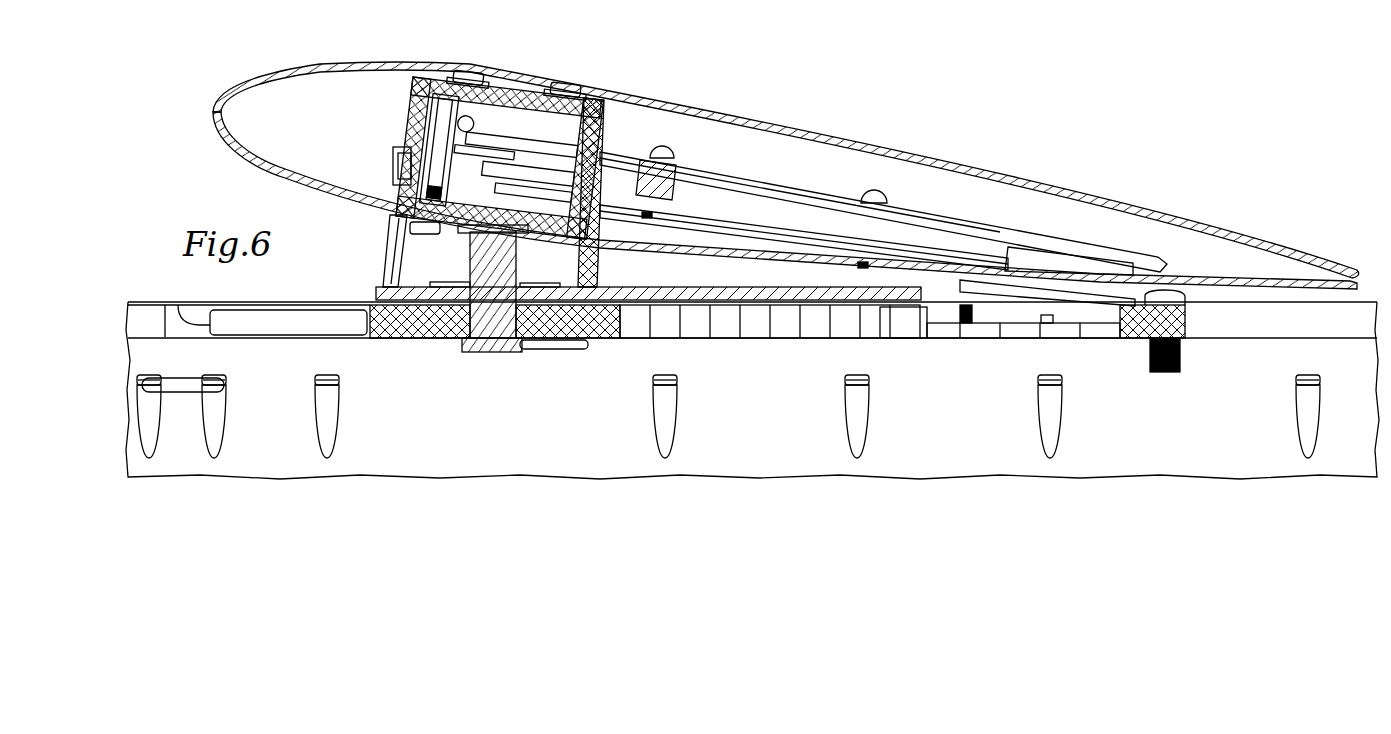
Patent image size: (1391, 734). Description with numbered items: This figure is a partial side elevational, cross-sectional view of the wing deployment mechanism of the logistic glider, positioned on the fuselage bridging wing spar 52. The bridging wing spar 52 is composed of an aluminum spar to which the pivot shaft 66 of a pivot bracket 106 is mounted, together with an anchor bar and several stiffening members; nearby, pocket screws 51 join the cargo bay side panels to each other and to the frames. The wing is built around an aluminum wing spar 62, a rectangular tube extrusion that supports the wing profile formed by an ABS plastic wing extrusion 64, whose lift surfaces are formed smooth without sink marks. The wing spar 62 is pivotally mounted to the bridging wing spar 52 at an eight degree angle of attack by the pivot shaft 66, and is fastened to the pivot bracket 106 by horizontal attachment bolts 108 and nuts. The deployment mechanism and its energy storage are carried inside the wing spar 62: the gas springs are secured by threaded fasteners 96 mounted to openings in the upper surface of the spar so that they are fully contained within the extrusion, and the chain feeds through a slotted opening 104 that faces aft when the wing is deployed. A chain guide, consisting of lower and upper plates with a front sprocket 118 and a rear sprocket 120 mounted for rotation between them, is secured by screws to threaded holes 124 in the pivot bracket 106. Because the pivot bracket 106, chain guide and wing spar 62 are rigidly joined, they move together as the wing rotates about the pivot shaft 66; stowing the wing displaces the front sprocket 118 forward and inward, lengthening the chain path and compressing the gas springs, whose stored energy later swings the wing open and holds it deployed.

The pocket screws 51 is at (330, 383).
The fuselage bridging wing spar 52 is at (414, 340).
The wing spar 62 is at (505, 120).
The wing extrusion 64 is at (812, 132).
The pivot shaft 66 is at (522, 268).
The threaded fasteners 96 is at (472, 62).
The slotted opening 104 is at (605, 145).
The pivot bracket 106 is at (388, 238).
The attachment bolts 108 is at (392, 160).
The front sprocket 118 is at (1000, 246).
The rear sprocket 120 is at (465, 142).
The threaded holes 124 is at (658, 148).